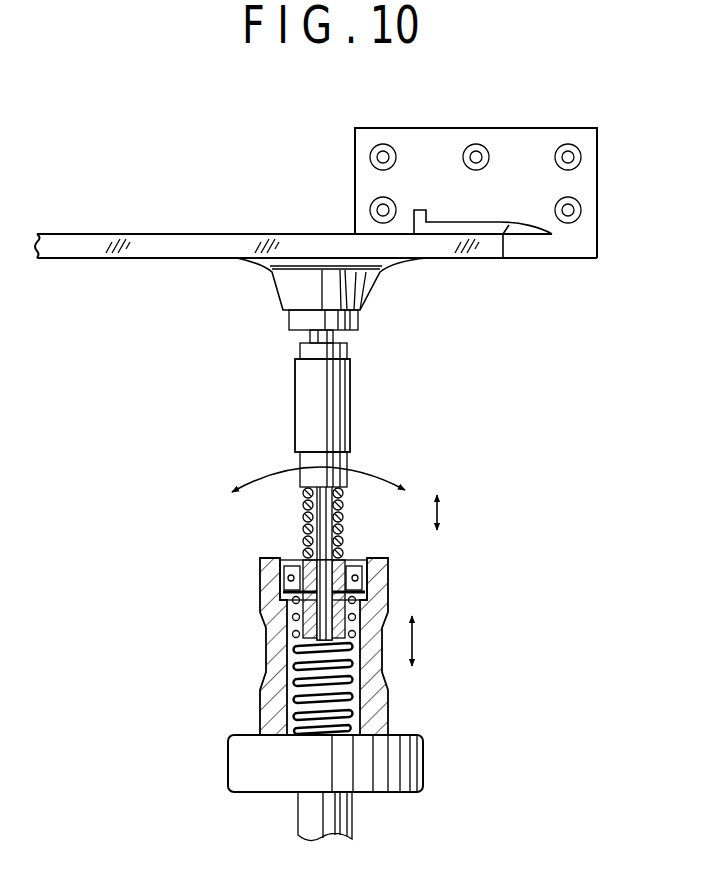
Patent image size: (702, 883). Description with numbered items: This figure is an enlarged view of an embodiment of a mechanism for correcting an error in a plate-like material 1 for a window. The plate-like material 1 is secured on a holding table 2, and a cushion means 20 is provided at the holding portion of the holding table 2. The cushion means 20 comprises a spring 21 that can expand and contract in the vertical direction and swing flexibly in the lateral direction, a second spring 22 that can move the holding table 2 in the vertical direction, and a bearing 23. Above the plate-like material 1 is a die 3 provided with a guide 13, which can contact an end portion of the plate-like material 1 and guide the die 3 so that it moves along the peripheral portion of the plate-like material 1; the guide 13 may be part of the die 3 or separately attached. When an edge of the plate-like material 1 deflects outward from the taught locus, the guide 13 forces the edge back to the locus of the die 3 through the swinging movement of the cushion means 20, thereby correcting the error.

The plate-like material 1 is at (118, 258).
The die 3 is at (503, 147).
The guide 13 is at (504, 262).
The holding table 2 is at (360, 441).
The cushion means 20 is at (297, 533).
The spring 21 is at (343, 528).
The bearing 23 is at (368, 577).
The spring 22 is at (365, 724).